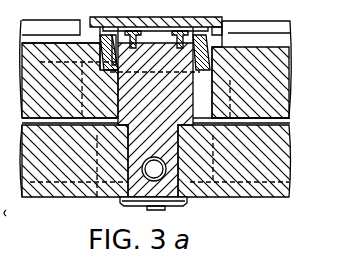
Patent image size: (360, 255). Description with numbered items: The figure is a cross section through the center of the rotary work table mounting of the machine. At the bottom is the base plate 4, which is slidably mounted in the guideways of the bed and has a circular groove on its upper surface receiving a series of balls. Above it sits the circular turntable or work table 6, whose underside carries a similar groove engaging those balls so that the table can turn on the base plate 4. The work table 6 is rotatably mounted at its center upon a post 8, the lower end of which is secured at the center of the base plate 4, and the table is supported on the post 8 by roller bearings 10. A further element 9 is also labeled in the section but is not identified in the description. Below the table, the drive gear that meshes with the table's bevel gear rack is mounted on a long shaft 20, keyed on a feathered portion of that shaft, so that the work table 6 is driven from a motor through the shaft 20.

The base plate 4 is at (66, 190).
The work table 6 is at (275, 21).
The post 8 is at (190, 28).
The transverse pin 9 is at (163, 178).
The roller bearings 10 is at (228, 22).
The shaft 20 is at (183, 205).